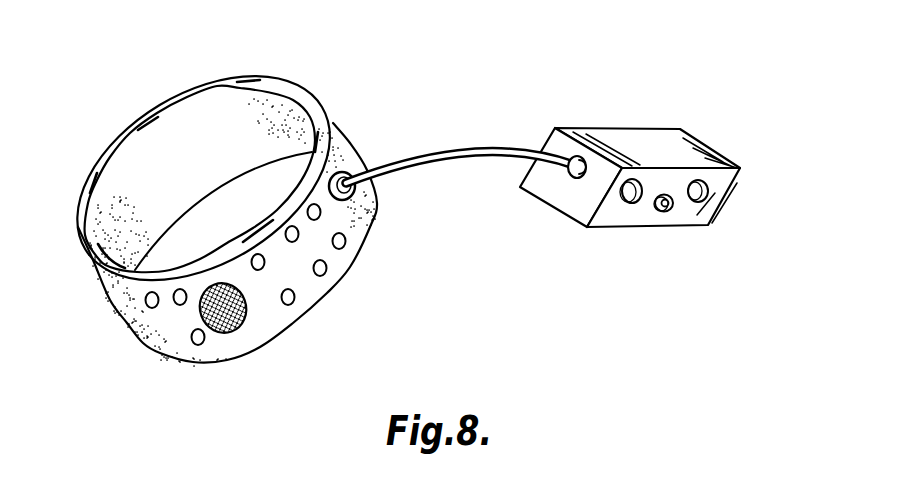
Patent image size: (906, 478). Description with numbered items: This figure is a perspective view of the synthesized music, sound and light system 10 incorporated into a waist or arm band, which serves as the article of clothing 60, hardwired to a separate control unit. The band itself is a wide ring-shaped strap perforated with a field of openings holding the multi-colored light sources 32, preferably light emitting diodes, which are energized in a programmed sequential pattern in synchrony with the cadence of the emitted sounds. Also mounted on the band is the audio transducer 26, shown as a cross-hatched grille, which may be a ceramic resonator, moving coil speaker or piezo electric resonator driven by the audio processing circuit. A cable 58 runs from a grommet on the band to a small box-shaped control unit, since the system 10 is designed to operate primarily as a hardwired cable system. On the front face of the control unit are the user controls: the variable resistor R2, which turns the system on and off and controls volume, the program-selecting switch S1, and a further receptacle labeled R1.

The synthesized music, sound and light system 10 is at (490, 108).
The audio transducer 26 is at (244, 293).
The light sources 32 is at (344, 244).
The cable 58 is at (482, 151).
The article of clothing 60 is at (127, 292).
The first receptacle R1 is at (630, 203).
The single-pole double-throw switch S1 is at (667, 211).
The variable resistor R2 is at (700, 194).